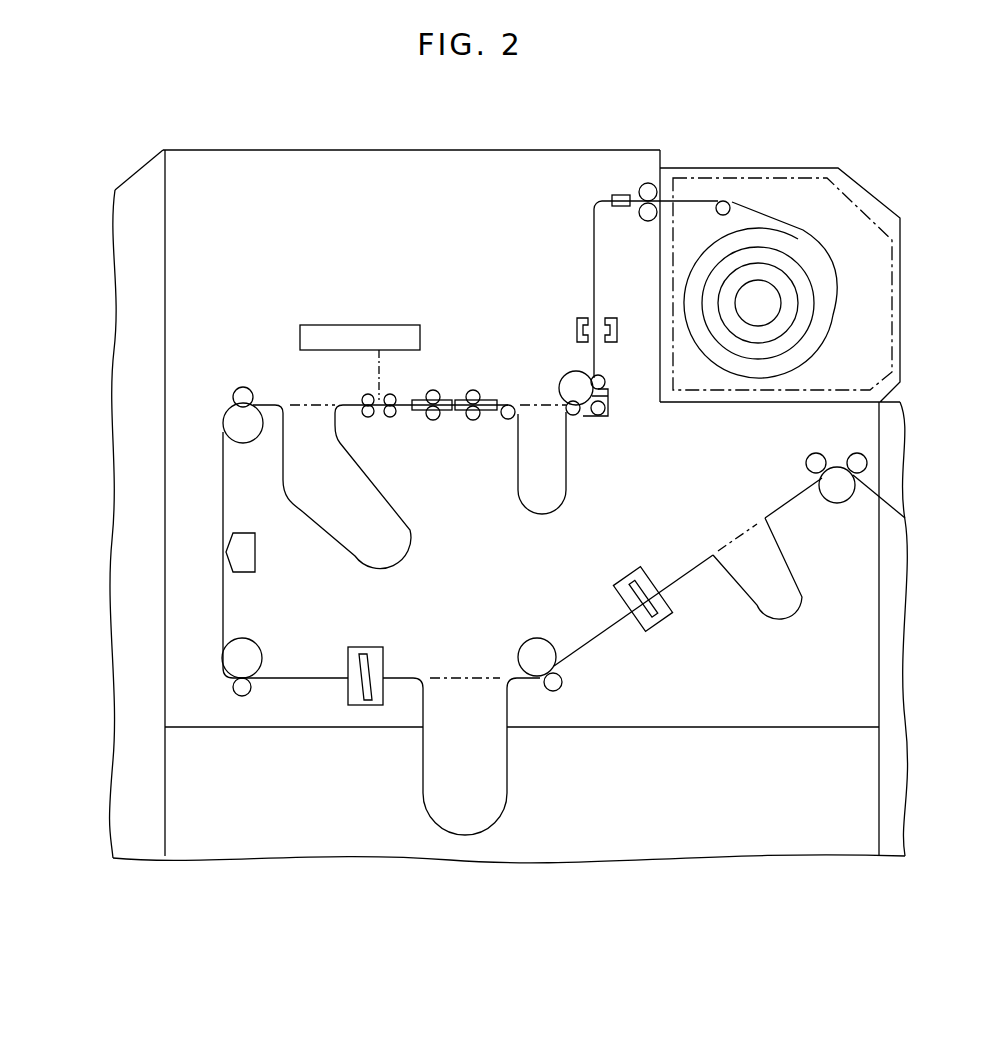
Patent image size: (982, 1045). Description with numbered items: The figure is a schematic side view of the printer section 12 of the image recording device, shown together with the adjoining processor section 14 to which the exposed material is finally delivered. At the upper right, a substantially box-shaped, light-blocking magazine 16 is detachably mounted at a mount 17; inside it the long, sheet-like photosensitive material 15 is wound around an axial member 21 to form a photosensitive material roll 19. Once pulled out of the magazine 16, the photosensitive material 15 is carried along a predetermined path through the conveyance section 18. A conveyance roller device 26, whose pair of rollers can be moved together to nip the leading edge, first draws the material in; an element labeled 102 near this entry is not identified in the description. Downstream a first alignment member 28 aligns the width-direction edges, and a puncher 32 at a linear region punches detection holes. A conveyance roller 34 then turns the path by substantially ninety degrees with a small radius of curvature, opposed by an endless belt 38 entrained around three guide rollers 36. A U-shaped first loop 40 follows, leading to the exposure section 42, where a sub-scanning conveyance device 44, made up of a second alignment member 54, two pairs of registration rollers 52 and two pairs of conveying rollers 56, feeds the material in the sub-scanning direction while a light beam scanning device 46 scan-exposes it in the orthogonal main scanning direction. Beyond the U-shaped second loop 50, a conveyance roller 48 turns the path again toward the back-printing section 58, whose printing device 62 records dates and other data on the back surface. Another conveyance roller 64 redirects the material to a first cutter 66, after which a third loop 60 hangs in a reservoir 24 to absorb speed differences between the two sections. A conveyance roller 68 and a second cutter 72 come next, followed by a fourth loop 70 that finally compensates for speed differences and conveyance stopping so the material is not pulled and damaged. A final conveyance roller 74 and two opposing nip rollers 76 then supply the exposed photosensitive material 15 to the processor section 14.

The printer section 12 is at (96, 191).
The processor section 14 is at (888, 678).
The photosensitive material 15 is at (688, 200).
The magazine 16 is at (885, 211).
The mount 17 is at (662, 151).
The conveyance section 18 is at (345, 147).
The photosensitive material roll 19 is at (798, 333).
The axial member 21 is at (770, 305).
The reservoir 24 is at (530, 798).
The conveyance roller device 26 is at (648, 183).
The first alignment member 28 is at (618, 196).
The puncher 32 is at (577, 328).
The conveyance roller 34 is at (565, 378).
The guide rollers 36 is at (606, 384).
The endless belt 38 is at (602, 416).
The first loop 40 is at (526, 520).
The exposure section 42 is at (446, 387).
The sub-scanning conveyance device 44 is at (436, 419).
The light beam scanning device 46 is at (374, 322).
The conveyance roller 48 is at (240, 432).
The second loop 50 is at (418, 545).
The registration rollers 52 is at (428, 391).
The second alignment member 54 is at (448, 393).
The conveying rollers 56 is at (373, 418).
The back-printing section 58 is at (212, 546).
The third loop 60 is at (420, 778).
The printing device 62 is at (258, 560).
The conveyance roller 64 is at (255, 655).
The first cutter 66 is at (377, 657).
The conveyance roller 68 is at (530, 652).
The fourth loop 70 is at (774, 622).
The second cutter 72 is at (632, 570).
The final conveyance roller 74 is at (836, 500).
The nip rollers 76 is at (855, 458).
The tape 102 is at (625, 177).